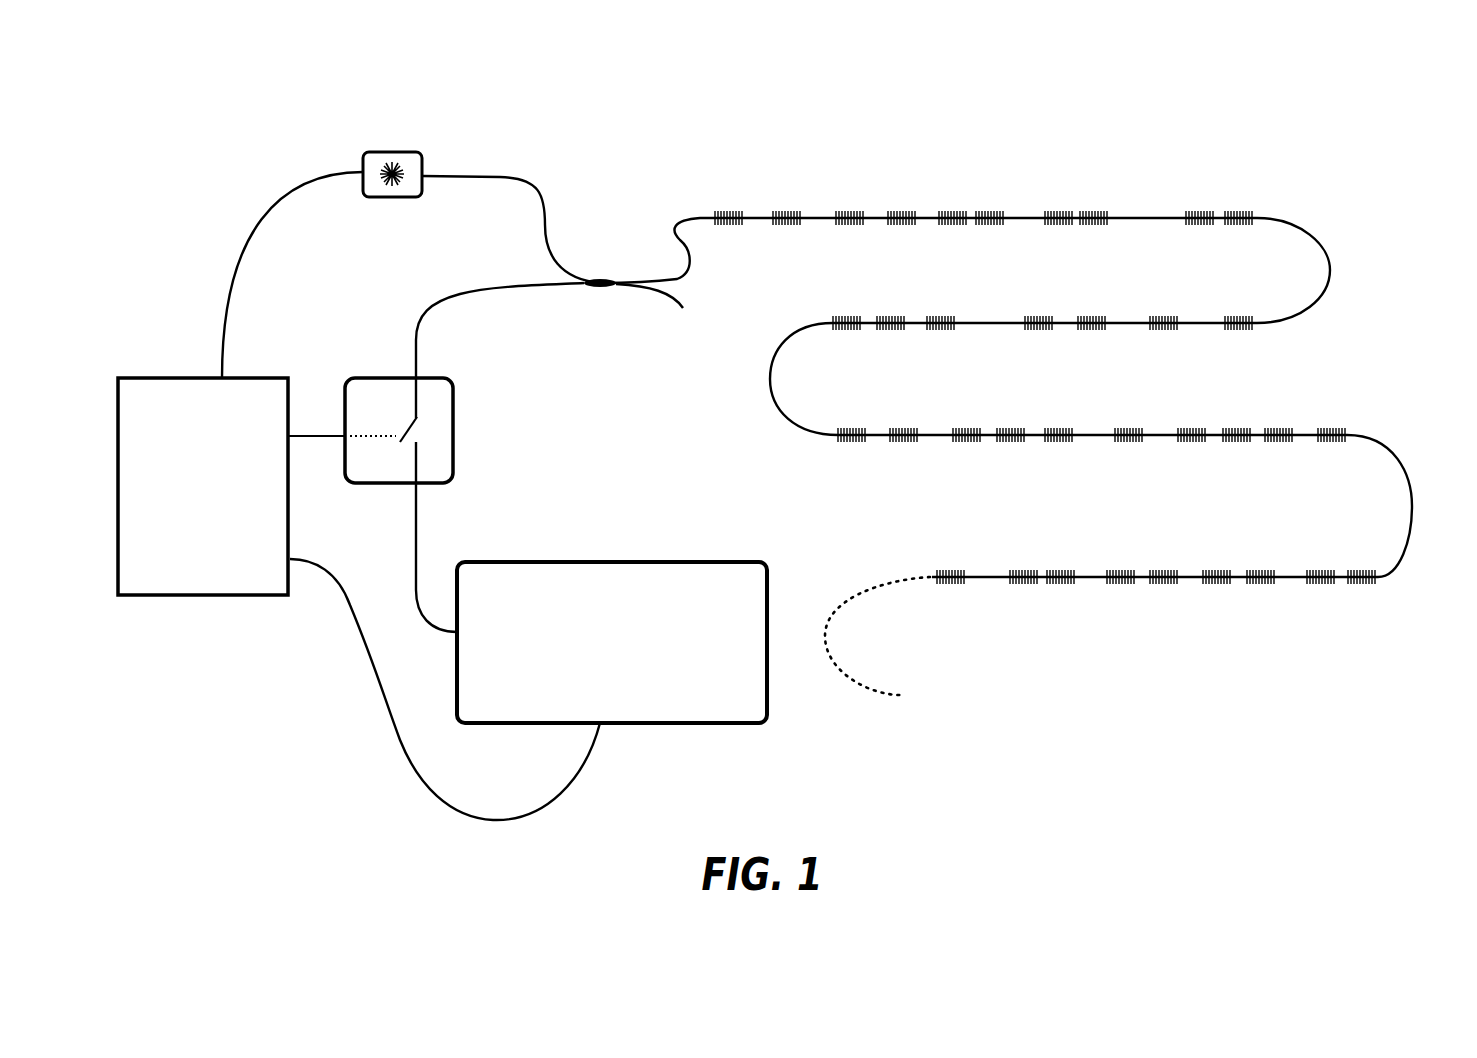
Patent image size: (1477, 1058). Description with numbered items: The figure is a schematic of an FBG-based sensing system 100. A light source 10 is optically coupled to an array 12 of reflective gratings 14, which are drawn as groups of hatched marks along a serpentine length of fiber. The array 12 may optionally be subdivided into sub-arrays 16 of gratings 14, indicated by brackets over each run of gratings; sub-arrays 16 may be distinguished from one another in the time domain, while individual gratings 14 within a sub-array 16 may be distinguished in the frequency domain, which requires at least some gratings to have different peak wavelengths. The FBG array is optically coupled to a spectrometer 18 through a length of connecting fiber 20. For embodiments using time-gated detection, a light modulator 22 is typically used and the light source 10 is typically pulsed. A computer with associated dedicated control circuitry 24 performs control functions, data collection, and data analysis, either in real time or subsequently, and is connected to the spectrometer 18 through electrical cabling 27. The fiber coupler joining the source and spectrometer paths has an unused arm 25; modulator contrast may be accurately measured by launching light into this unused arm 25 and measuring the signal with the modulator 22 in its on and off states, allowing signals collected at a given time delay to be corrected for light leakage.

The FBG-based sensing system 100 is at (284, 103).
The light source 10 is at (426, 158).
The array 12 is at (1400, 143).
The reflective gratings 14 is at (733, 224).
The sub-arrays 16 is at (1258, 198).
The spectrometer 18 is at (588, 675).
The connecting fiber 20 is at (487, 291).
The light modulator 22 is at (388, 412).
The computer with associated dedicated control circuitry 24 is at (180, 543).
The unused arm of the fiber coupler 25 is at (658, 295).
The electrical cabling 27 is at (595, 765).